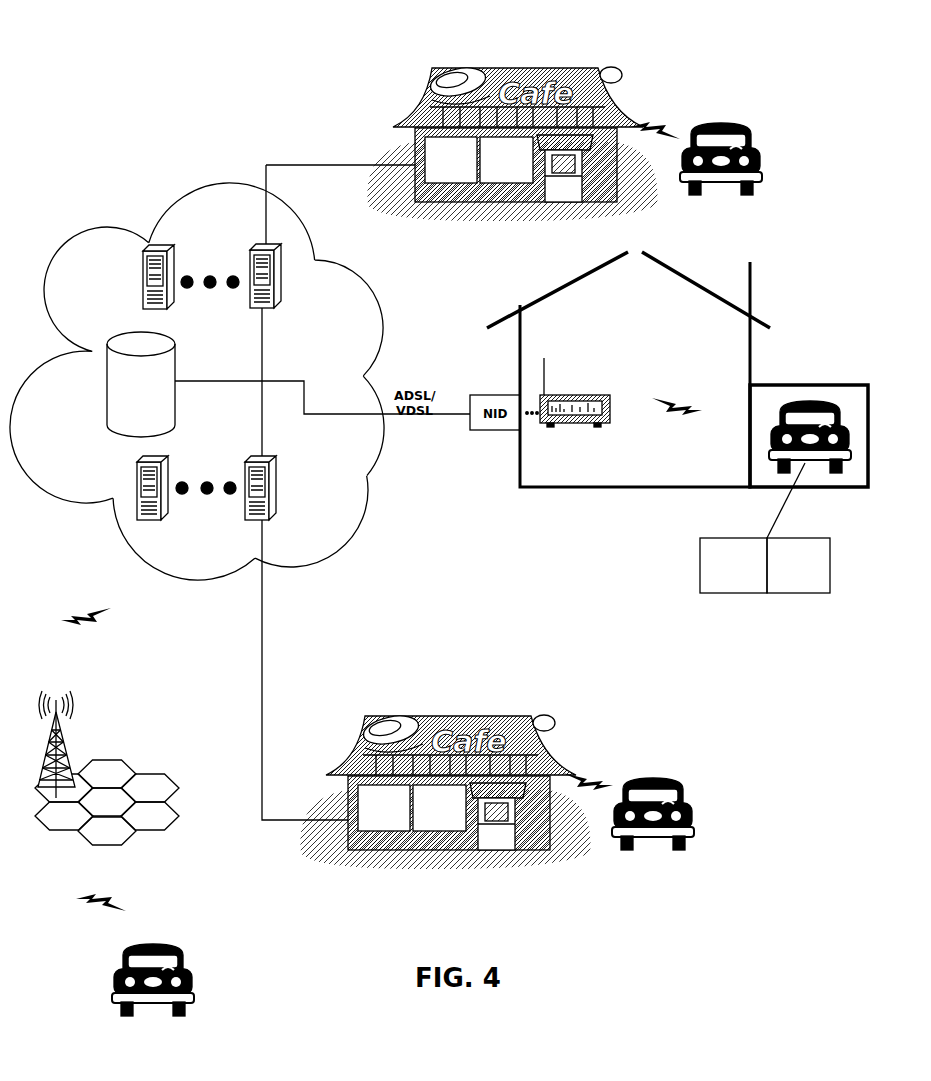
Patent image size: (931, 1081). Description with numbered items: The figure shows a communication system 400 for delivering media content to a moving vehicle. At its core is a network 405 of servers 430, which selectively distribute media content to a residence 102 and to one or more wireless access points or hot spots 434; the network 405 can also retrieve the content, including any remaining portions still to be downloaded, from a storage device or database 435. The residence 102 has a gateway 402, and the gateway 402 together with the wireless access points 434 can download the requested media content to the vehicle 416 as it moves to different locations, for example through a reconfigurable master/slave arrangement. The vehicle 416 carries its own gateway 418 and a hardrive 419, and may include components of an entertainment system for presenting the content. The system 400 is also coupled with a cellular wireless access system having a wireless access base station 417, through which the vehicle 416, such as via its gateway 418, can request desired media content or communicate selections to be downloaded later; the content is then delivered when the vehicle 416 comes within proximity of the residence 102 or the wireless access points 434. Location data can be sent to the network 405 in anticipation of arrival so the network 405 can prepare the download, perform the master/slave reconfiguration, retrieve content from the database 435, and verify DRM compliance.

The communication system 400 is at (480, 954).
The network 405 is at (240, 354).
The servers 430 is at (275, 282).
The storage device or database 435 is at (160, 402).
The wireless access points or hot spots 434 is at (608, 68).
The vehicle 416 is at (733, 122).
The residence 102 is at (658, 471).
The gateway 402 is at (569, 392).
The wireless access base station 417 is at (105, 760).
The gateway 418 is at (798, 565).
The hardrive 419 is at (733, 565).